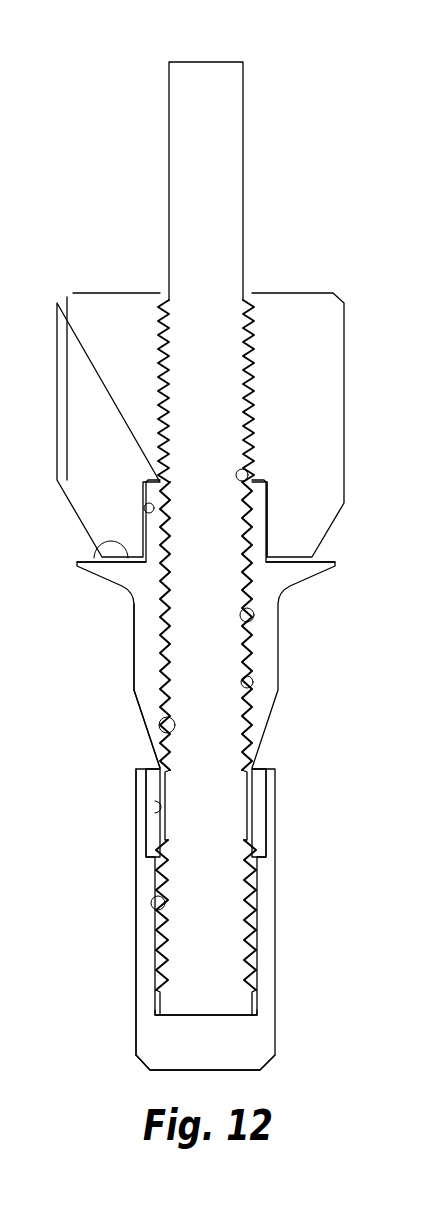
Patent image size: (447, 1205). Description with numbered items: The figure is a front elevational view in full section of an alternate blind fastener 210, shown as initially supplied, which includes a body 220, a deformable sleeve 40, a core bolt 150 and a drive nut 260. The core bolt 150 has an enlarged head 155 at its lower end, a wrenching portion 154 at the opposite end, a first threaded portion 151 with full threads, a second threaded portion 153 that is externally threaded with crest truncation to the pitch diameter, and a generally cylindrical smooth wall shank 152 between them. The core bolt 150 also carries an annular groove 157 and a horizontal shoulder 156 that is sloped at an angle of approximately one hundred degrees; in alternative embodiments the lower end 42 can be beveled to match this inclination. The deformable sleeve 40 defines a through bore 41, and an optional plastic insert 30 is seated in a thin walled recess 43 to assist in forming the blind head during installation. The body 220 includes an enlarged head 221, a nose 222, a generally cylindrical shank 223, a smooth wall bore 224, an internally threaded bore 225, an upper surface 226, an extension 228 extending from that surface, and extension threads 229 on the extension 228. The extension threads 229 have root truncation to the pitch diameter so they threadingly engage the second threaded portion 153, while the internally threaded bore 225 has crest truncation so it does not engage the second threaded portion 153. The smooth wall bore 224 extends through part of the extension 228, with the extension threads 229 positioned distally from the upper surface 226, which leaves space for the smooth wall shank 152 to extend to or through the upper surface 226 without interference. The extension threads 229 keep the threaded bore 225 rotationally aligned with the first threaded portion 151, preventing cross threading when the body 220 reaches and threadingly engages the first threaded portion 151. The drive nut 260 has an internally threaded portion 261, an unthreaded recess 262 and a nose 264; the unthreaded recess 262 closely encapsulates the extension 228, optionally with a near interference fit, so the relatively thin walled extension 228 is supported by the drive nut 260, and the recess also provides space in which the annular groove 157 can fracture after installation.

The blind fastener 210 is at (268, 68).
The core bolt 150 is at (213, 62).
The wrenching portion 154 is at (243, 142).
The second threaded portion 153 is at (157, 347).
The internally threaded portion 261 is at (255, 318).
The annular groove 157 is at (160, 722).
The first threaded portion 151 is at (260, 940).
The drive nut 260 is at (102, 338).
The unthreaded recess 262 is at (146, 511).
The upper surface 226 is at (100, 557).
The extension 228 is at (262, 518).
The extension threads 229 is at (253, 473).
The body 220 is at (152, 625).
The nose 264 is at (125, 571).
The enlarged head 221 is at (300, 573).
The shank 223 is at (134, 669).
The nose 222 is at (146, 738).
The smooth wall bore 224 is at (253, 626).
The internally threaded bore 225 is at (253, 681).
The plastic insert 30 is at (268, 831).
The deformable sleeve 40 is at (145, 871).
The through bore 41 is at (158, 919).
The thin walled recess 43 is at (150, 806).
The smooth wall shank 152 is at (265, 801).
The horizontal shoulder 156 is at (137, 1002).
The lower end 42 is at (262, 1023).
The enlarged head 155 is at (237, 1053).